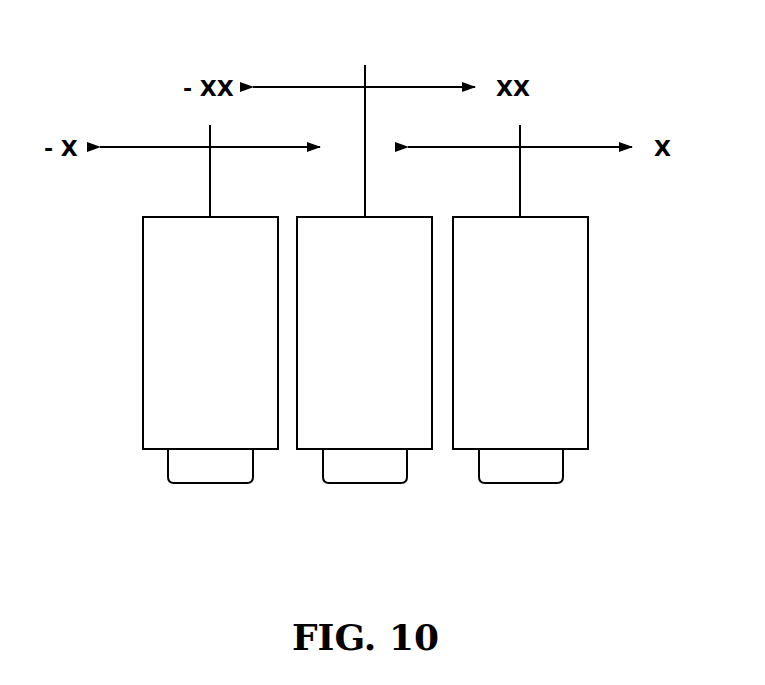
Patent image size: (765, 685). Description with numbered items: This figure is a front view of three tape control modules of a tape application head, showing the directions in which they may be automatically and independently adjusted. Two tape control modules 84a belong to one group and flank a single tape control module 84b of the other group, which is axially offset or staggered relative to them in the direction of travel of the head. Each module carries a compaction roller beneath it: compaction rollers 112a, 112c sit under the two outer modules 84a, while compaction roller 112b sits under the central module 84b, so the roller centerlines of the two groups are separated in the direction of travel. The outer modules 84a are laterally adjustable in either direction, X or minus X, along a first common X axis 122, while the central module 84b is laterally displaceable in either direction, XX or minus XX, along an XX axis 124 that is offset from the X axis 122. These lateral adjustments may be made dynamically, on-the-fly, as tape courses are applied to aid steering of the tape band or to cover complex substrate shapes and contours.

The tape control module of the second group 84a is at (193, 330).
The tape control module of the first group 84b is at (398, 395).
The compaction roller 112a is at (207, 468).
The compaction roller 112b is at (363, 470).
The compaction roller 112c is at (541, 464).
The X axis 122 is at (149, 147).
The XX axis 124 is at (427, 87).